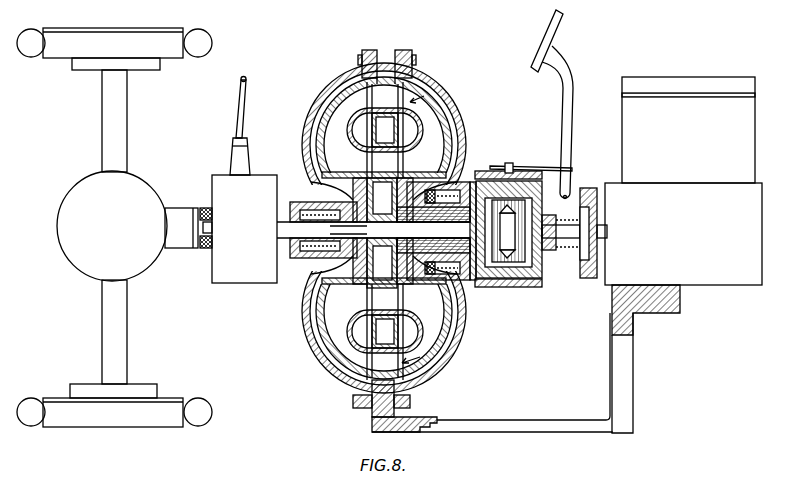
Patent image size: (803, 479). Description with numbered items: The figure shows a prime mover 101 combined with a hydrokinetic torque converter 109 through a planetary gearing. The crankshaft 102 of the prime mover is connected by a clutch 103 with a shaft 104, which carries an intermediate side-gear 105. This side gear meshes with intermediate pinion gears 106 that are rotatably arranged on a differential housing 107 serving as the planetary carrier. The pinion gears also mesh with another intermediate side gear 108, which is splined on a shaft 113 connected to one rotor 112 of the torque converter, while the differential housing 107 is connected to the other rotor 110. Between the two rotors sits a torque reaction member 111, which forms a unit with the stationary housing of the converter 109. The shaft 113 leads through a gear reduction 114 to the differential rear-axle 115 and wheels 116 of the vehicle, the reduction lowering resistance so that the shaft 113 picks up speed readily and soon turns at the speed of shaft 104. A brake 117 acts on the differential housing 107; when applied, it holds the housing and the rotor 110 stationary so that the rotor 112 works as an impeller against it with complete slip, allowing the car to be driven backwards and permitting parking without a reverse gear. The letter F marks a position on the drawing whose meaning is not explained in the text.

The prime mover 101 is at (727, 80).
The crankshaft 102 is at (602, 231).
The clutch 103 is at (578, 188).
The shaft 104 is at (560, 240).
The intermediate side-gear 105 is at (530, 280).
The intermediate pinion gears 106 is at (503, 265).
The differential housing 107 is at (485, 172).
The intermediate side gear 108 is at (477, 290).
The hydrokinetic torque converter 109 is at (450, 84).
The rotor 110 is at (423, 85).
The torque reaction member 111 is at (383, 73).
The rotor 112 is at (323, 88).
The shaft 113 is at (287, 227).
The gear reduction 114 is at (243, 167).
The differential rear-axle 115 is at (136, 185).
The wheels 116 is at (199, 57).
The brake 117 is at (555, 45).
The force F is at (205, 250).